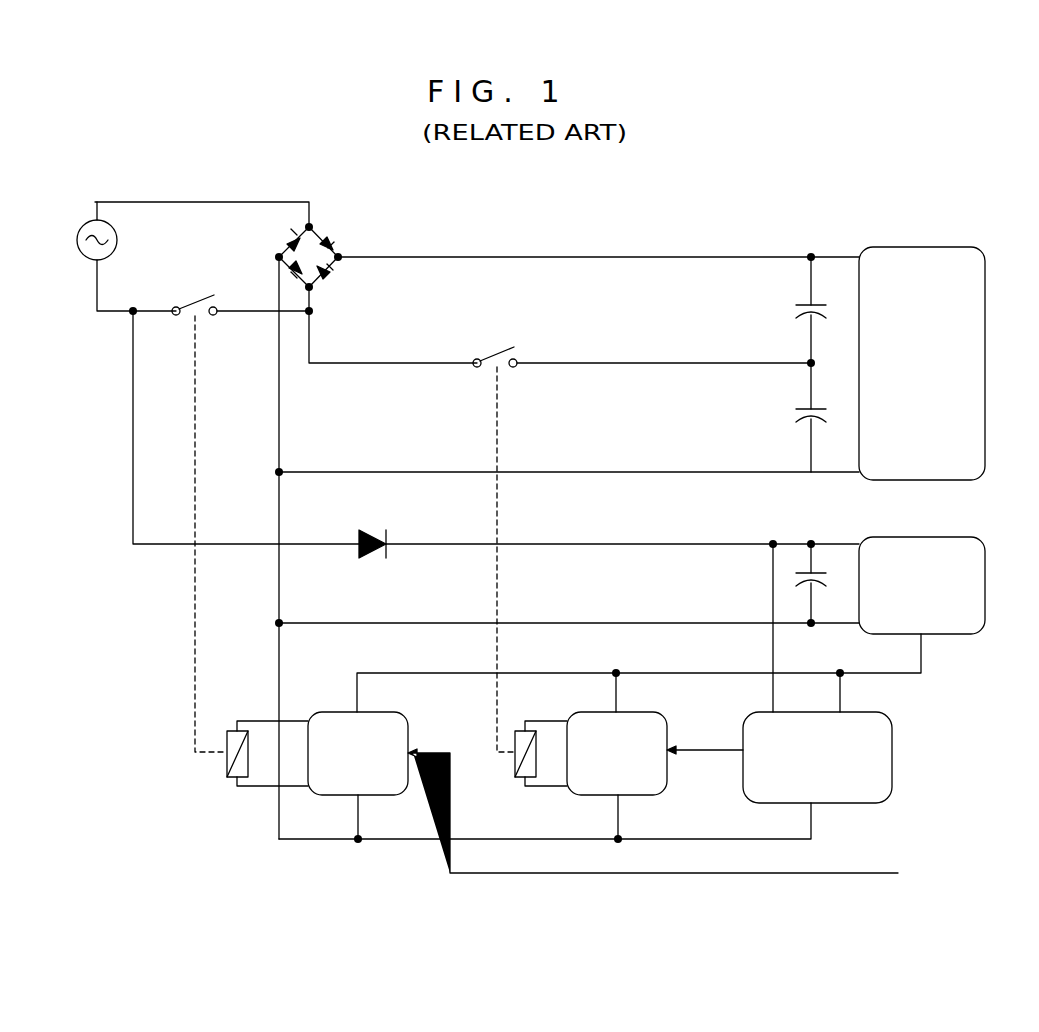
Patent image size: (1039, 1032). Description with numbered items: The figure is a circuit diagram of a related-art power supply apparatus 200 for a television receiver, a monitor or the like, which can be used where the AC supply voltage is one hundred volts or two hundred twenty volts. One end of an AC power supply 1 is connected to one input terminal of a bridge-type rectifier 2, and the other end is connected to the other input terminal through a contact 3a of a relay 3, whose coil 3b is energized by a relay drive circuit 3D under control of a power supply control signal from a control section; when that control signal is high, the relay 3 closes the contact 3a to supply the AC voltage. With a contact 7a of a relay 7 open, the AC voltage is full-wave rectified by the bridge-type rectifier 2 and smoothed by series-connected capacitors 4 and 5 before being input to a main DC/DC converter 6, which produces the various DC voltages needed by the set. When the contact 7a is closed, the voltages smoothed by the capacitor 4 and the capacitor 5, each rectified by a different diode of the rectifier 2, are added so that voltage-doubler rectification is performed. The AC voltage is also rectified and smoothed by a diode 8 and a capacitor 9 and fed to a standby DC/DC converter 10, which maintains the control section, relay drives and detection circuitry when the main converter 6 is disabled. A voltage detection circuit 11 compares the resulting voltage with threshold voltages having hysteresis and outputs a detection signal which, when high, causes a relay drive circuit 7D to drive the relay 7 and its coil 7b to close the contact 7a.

The AC power supply 1 is at (82, 260).
The bridge-type rectifier 2 is at (328, 226).
The relay 3 is at (203, 786).
The contact 3a is at (195, 299).
The relay coil 3b is at (232, 788).
The relay drive circuit 3D is at (366, 797).
The capacitor 4 is at (826, 312).
The capacitor 5 is at (826, 416).
The main DC/DC converter 6 is at (908, 247).
The relay 7 is at (500, 786).
The contact 7a is at (480, 357).
The relay coil 7b is at (520, 788).
The relay drive circuit 7D is at (626, 797).
The diode 8 is at (370, 530).
The capacitor 9 is at (830, 581).
The standby DC/DC converter 10 is at (910, 530).
The voltage detection circuit 11 is at (848, 804).
The power supply apparatus 200 is at (610, 221).